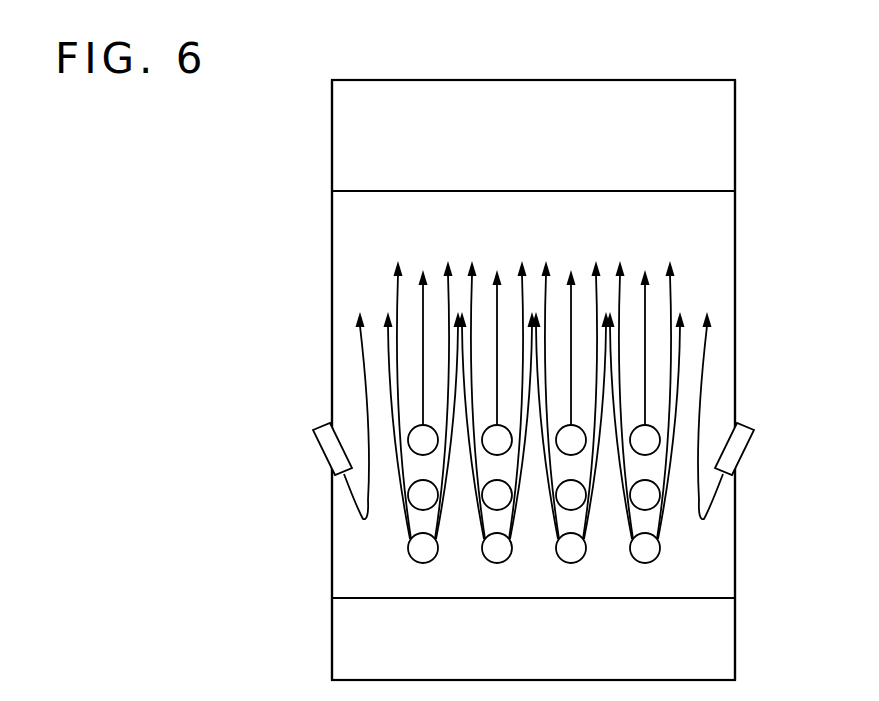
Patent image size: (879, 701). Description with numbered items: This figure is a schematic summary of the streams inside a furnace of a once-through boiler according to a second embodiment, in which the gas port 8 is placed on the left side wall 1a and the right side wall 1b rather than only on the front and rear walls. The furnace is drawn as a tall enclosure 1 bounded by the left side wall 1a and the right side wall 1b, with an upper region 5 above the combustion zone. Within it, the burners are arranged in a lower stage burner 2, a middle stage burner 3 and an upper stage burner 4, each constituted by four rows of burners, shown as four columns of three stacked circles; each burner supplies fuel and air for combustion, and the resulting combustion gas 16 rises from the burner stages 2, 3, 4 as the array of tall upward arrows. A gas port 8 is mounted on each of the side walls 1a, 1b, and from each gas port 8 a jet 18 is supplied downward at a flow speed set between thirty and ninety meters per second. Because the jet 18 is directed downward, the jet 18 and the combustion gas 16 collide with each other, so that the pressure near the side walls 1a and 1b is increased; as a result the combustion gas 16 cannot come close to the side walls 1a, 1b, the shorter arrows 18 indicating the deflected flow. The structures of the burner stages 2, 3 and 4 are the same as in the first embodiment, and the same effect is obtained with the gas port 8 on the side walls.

The housing / chamber 1 is at (737, 567).
The left side wall 1a is at (332, 378).
The right side wall 1b is at (737, 372).
The lower stage burner 2 is at (408, 553).
The middle stage burner 3 is at (408, 500).
The upper stage burner 4 is at (408, 447).
The upper plate 5 is at (722, 143).
The gas port 8 is at (316, 428).
The combustion gas 16 is at (396, 291).
The jet 18 is at (358, 343).